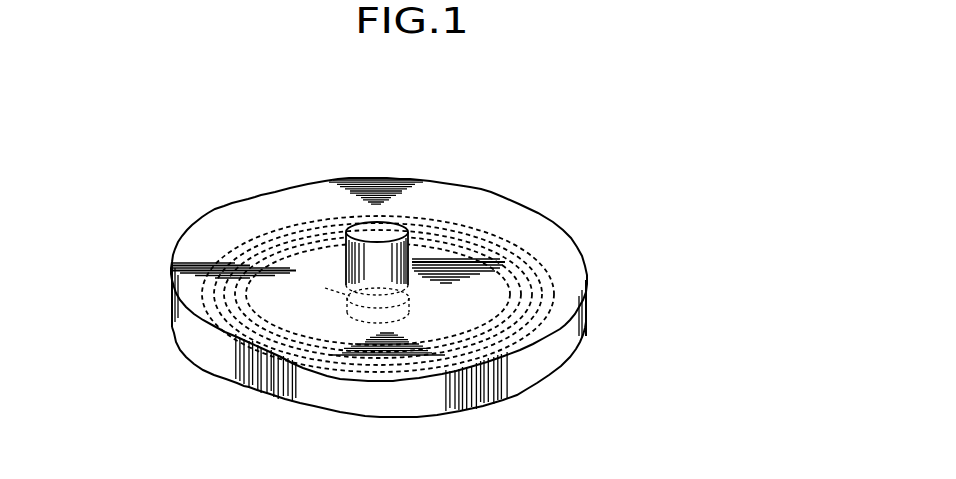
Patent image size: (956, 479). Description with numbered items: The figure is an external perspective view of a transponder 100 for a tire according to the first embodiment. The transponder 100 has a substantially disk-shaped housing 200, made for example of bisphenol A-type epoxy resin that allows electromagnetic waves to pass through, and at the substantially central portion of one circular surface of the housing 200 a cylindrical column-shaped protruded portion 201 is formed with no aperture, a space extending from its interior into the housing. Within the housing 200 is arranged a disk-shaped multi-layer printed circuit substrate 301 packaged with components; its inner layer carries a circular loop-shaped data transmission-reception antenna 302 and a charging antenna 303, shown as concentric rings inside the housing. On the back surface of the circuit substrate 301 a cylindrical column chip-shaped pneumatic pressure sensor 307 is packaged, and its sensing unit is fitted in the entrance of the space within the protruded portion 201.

The transponder 100 is at (550, 208).
The housing 200 is at (565, 244).
The protruded portion 201 is at (371, 230).
The circuit substrate 301 is at (245, 398).
The data transmission-reception antenna 302 is at (290, 222).
The charging antenna 303 is at (450, 228).
The pneumatic pressure sensor 307 is at (300, 272).